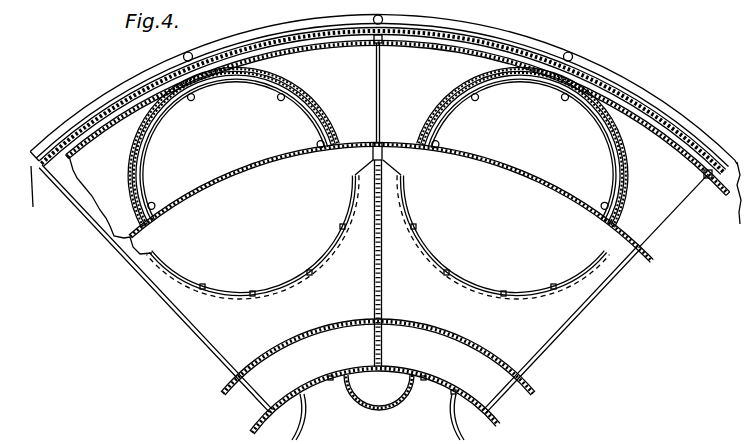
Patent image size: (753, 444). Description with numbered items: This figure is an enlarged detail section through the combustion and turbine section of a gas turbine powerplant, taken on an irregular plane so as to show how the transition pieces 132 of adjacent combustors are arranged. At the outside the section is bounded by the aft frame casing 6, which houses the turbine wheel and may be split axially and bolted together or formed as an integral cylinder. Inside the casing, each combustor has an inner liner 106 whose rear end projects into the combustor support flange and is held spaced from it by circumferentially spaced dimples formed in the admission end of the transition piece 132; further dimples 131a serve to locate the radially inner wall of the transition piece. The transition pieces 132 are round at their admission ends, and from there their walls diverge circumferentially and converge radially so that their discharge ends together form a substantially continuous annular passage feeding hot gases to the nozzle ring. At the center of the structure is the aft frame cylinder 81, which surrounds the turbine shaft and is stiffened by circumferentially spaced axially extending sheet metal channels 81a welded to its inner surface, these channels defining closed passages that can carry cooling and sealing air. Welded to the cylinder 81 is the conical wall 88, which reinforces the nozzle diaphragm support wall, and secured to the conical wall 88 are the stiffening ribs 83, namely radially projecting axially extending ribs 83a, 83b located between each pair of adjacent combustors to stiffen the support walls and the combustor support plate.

The aft frame casing 6 is at (466, 34).
The transition piece 132 is at (410, 45).
The inner liner 106 is at (240, 84).
The flange ring 131a is at (150, 203).
The frame 83 is at (378, 237).
The rib 83a is at (375, 250).
The rib 83b is at (374, 343).
The conical wall 88 is at (293, 339).
The aft frame cylinder 81 is at (424, 376).
The sheet metal channel 81a is at (303, 418).